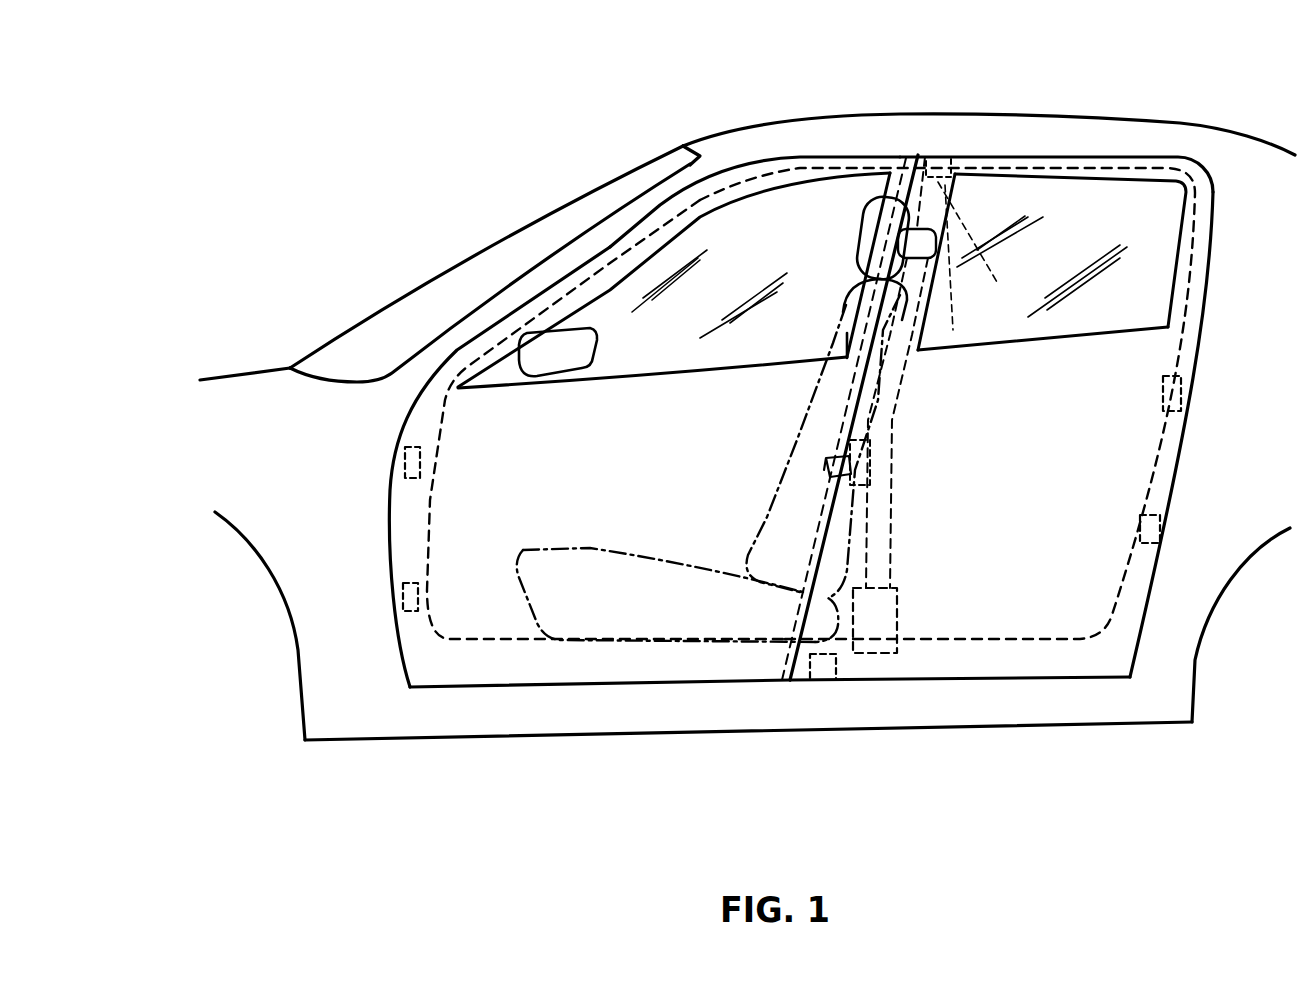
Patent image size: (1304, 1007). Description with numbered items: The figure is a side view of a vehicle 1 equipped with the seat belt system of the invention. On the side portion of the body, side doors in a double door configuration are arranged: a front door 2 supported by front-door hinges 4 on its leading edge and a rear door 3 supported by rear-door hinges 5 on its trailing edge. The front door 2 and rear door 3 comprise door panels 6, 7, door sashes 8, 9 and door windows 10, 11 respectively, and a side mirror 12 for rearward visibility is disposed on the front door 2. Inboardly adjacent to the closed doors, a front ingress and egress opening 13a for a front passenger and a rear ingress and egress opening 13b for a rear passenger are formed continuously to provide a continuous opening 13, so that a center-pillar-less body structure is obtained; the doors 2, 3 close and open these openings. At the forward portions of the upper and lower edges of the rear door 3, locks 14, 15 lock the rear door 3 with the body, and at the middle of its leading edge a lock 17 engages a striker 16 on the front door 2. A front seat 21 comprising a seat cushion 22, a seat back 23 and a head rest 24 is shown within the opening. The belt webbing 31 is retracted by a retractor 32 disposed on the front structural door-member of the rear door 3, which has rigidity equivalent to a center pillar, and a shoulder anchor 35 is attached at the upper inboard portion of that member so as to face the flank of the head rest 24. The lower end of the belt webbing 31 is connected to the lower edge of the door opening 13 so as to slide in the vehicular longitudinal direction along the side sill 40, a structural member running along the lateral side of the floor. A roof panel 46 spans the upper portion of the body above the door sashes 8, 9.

The vehicle 1 is at (745, 97).
The front door 2 is at (577, 692).
The rear door 3 is at (991, 688).
The front-door hinges 4 is at (355, 605).
The rear-door hinges 5 is at (1160, 530).
The door panel 6 is at (518, 489).
The door panel 7 is at (1026, 484).
The door sash 8 is at (813, 157).
The door sash 9 is at (1058, 157).
The door window 10 is at (766, 274).
The door window 11 is at (1068, 270).
The side mirror 12 is at (557, 363).
The continuous opening 13 is at (988, 152).
The front ingress and egress opening 13a is at (592, 278).
The rear ingress and egress opening 13b is at (1148, 175).
The lock 14 is at (974, 175).
The lock 15 is at (822, 682).
The striker 16 is at (830, 460).
The lock 17 is at (866, 440).
The front seat 21 is at (755, 491).
The seat cushion 22 is at (598, 550).
The seat back 23 is at (832, 343).
The head rest 24 is at (862, 218).
The belt webbing 31 is at (893, 525).
The retractor 32 is at (897, 600).
The shoulder anchor 35 is at (927, 262).
The side sill 40 is at (712, 723).
The roof panel 46 is at (908, 117).